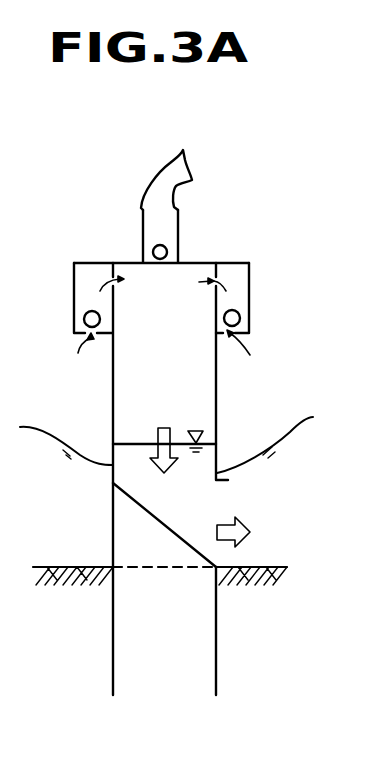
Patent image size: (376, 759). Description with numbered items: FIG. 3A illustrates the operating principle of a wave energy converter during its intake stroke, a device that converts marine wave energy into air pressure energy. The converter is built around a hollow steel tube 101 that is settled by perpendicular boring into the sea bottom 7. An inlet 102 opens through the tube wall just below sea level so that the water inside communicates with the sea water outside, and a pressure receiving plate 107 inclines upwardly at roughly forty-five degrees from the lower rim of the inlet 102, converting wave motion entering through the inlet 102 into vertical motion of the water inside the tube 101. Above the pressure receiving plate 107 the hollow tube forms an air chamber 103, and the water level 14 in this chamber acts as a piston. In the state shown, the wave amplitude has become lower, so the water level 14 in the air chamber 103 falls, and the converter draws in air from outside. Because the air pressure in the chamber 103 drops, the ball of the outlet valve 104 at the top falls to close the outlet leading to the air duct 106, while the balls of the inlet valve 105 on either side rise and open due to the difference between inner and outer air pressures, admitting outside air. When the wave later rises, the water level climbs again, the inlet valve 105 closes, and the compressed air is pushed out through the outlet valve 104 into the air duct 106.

The sea bottom 7 is at (60, 566).
The water level 14 is at (132, 443).
The steel tube 101 is at (112, 380).
The inlet 102 is at (220, 505).
The air chamber 103 is at (205, 396).
The outlet valve 104 is at (156, 239).
The inlet valve 105 is at (87, 300).
The air duct 106 is at (157, 171).
The pressure receiving plate 107 is at (131, 499).